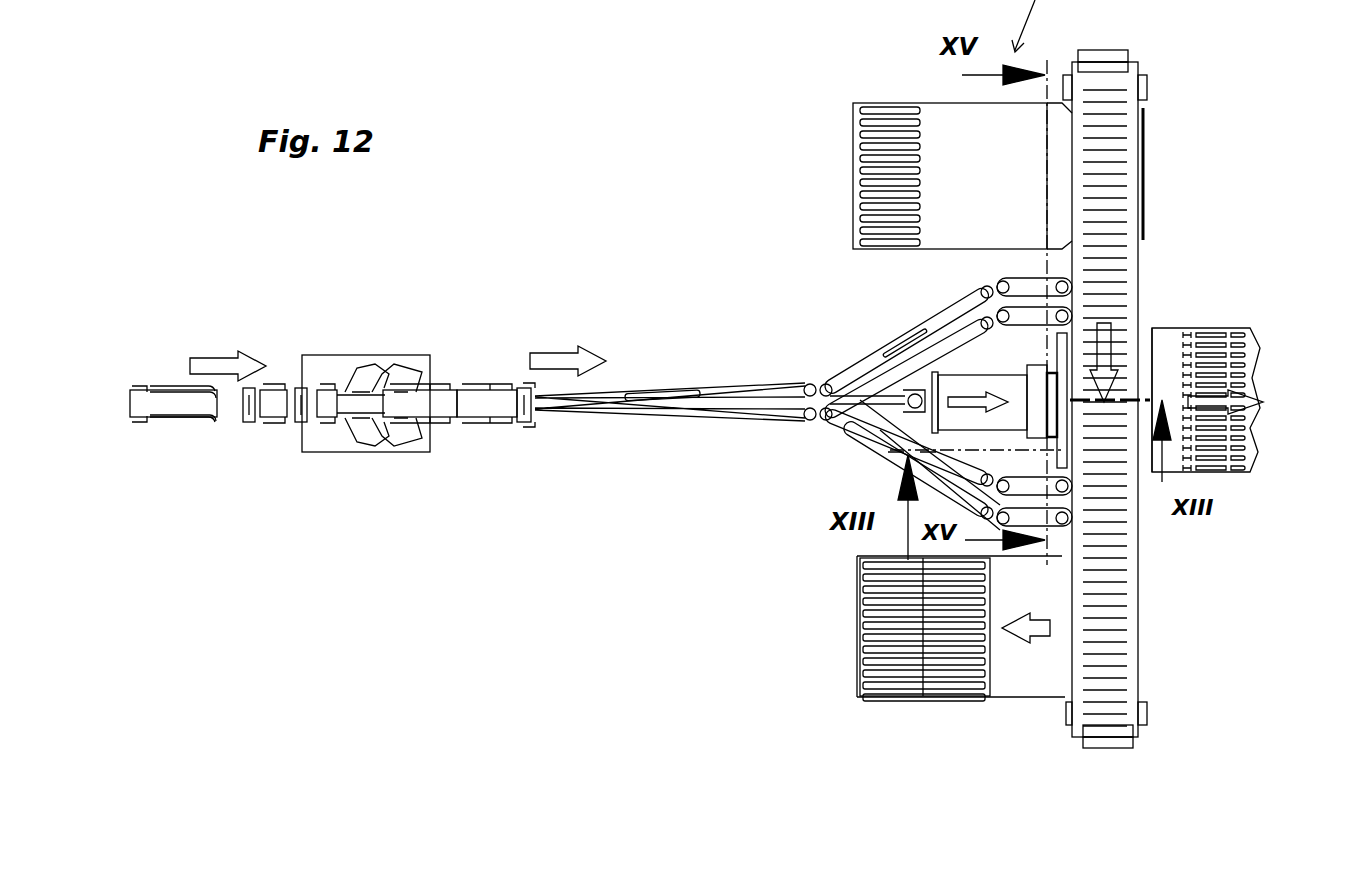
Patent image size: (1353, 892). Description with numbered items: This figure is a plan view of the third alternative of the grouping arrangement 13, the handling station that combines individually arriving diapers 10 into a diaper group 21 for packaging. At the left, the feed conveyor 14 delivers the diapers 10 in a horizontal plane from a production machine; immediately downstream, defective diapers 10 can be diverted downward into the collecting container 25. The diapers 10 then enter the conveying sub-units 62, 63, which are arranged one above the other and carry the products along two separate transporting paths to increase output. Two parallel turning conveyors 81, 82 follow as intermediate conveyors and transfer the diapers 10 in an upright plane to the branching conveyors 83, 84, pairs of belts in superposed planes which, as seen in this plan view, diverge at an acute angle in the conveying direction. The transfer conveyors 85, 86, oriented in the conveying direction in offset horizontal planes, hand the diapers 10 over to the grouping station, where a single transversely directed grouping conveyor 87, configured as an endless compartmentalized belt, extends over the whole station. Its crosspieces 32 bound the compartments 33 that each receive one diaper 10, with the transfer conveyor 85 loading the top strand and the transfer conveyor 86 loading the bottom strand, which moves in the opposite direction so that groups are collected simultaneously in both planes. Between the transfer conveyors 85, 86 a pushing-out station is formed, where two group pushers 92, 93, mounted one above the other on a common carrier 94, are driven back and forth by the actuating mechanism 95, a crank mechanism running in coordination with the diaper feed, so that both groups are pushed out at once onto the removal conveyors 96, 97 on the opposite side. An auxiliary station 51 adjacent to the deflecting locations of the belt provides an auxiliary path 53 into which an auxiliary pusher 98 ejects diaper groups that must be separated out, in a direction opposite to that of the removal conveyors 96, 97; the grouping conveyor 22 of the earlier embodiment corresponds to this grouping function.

The diapers 10 is at (655, 390).
The grouping arrangement 13 is at (1175, 391).
The feed conveyor 14 is at (169, 355).
The diaper group 21 is at (855, 147).
The grouping conveyor 22 is at (890, 597).
The collecting container 25 is at (372, 455).
The crosspieces 32 is at (1112, 100).
The compartment 33 is at (1122, 265).
The auxiliary station 51 is at (915, 724).
The auxiliary path 53 is at (951, 103).
The conveying sub-unit 62 is at (459, 352).
The conveying sub-unit 63 is at (459, 405).
The turning conveyor 81 is at (683, 349).
The turning conveyor 82 is at (683, 375).
The branching conveyor 83 is at (870, 314).
The branching conveyor 84 is at (823, 485).
The transfer conveyor 85 is at (990, 269).
The transfer conveyor 86 is at (1061, 546).
The grouping conveyor 87 is at (1174, 282).
The group pusher 92 is at (1189, 388).
The group pusher 93 is at (1062, 357).
The common carrier 94 is at (904, 430).
The actuating mechanism 95 is at (910, 395).
The removal conveyor 96 is at (1231, 444).
The removal conveyor 97 is at (1245, 473).
The auxiliary pusher 98 is at (1145, 140).